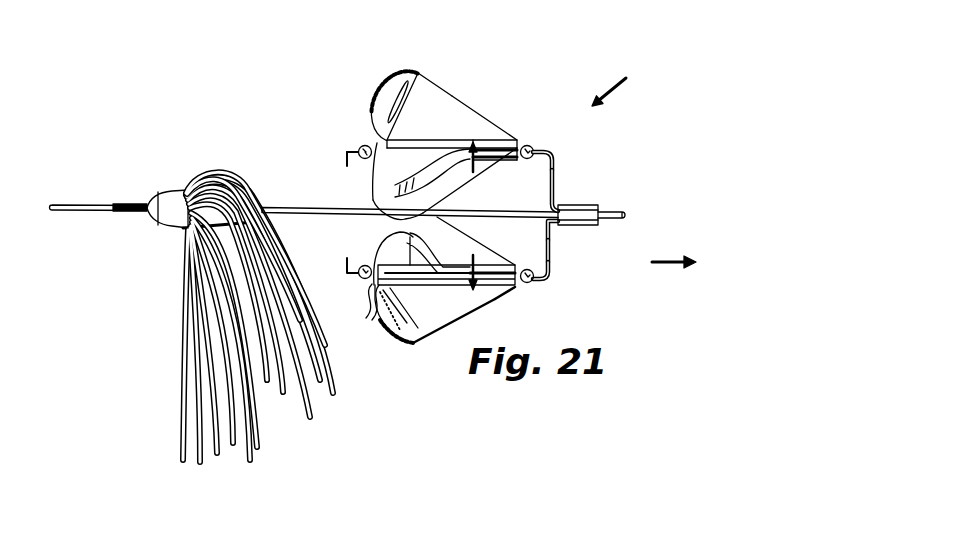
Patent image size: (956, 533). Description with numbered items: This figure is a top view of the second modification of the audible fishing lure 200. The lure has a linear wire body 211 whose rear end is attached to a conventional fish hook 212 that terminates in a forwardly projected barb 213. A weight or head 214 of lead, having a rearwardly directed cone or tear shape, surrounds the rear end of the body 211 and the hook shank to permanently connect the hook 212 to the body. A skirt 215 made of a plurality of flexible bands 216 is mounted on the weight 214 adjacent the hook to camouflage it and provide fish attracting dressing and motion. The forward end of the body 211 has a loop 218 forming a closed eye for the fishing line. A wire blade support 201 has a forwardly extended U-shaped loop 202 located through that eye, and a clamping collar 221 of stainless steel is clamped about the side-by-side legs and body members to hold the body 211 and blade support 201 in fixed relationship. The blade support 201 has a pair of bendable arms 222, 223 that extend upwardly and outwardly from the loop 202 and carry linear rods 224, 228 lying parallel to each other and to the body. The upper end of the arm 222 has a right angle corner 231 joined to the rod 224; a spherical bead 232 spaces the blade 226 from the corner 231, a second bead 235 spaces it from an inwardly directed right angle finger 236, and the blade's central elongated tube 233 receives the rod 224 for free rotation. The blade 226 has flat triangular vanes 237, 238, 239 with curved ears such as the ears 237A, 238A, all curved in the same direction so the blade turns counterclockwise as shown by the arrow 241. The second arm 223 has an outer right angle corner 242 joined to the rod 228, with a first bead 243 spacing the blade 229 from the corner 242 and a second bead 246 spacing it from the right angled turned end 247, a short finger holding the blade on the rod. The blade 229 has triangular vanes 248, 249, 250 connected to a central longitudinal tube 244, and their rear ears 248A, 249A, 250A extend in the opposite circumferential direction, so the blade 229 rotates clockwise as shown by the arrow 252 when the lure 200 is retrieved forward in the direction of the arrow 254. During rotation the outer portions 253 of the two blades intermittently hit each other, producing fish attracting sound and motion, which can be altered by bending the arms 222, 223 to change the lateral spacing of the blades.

The audible fishing lure 200 is at (625, 87).
The blade support 201 is at (562, 187).
The U-shaped loop 202 is at (600, 225).
The linear wire body 211 is at (277, 204).
The fish hook 212 is at (68, 178).
The barb 213 is at (100, 203).
The weight or head 214 is at (213, 197).
The skirt 215 is at (307, 403).
The flexible bands 216 is at (167, 227).
The loop 218 is at (617, 212).
The clamping collar 221 is at (580, 227).
The bendable arm 222 is at (545, 238).
The bendable arm 223 is at (557, 170).
The rod 224 is at (367, 300).
The blade 226 is at (416, 352).
The rod 228 is at (380, 137).
The blade 229 is at (431, 72).
The right angle corner 231 is at (551, 278).
The spherical bead 232 is at (528, 282).
The central elongated tube 233 is at (403, 287).
The second bead 235 is at (367, 280).
The right angle finger 236 is at (344, 264).
The vane 237 is at (450, 305).
The curved ear 237A is at (385, 326).
The vane 238 is at (412, 236).
The curved ear 238A is at (377, 247).
The vane 239 is at (482, 242).
The arrow 241 is at (517, 297).
The right angle corner 242 is at (554, 151).
The first bead 243 is at (525, 146).
The central longitudinal tube 244 is at (497, 140).
The second bead 246 is at (365, 143).
The right angled turned end 247 is at (360, 146).
The vane 248 is at (447, 177).
The ear 248A is at (373, 175).
The vane 249 is at (416, 72).
The ear 249A is at (347, 163).
The vane 250 is at (432, 100).
The ear 250A is at (411, 160).
The arrow 252 is at (457, 157).
The outer portions 253 is at (373, 223).
The arrow 254 is at (663, 264).